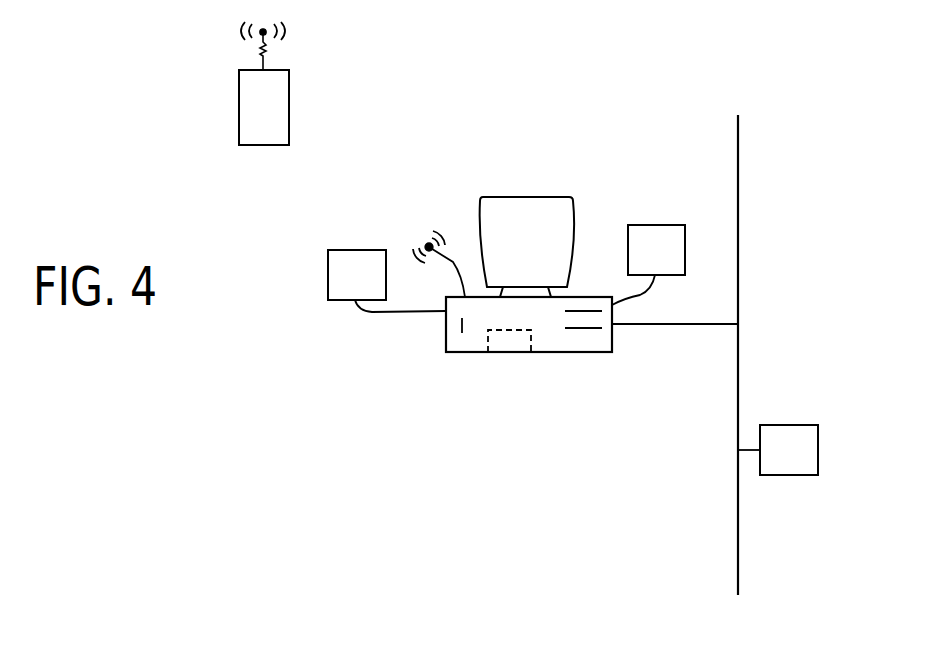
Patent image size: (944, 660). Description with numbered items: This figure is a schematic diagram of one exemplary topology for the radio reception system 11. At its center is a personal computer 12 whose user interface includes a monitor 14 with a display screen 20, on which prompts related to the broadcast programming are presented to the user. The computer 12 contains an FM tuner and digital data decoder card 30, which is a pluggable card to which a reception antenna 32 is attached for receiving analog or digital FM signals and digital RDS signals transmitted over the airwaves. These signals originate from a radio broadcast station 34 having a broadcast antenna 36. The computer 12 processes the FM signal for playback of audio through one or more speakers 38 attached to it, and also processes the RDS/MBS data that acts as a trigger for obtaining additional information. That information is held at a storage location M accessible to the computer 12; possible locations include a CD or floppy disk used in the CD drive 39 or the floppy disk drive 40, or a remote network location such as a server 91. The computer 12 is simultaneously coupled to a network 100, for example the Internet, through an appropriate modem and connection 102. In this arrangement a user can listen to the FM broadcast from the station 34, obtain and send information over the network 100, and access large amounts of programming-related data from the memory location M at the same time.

The radio reception system 11 is at (776, 92).
The personal computer 12 is at (582, 176).
The monitor 14 is at (573, 226).
The display screen 20 is at (506, 204).
The FM tuner and digital data decoder card 30 is at (462, 332).
The reception antenna 32 is at (453, 262).
The radio broadcast station 34 is at (314, 100).
The broadcast antenna 36 is at (265, 62).
The speakers 38 is at (336, 282).
The CD drive 39 is at (580, 329).
The floppy disk drive 40 is at (583, 310).
The server 91 is at (797, 431).
The network 100 is at (738, 211).
The connection 102 is at (706, 325).
The storage location M is at (503, 348).